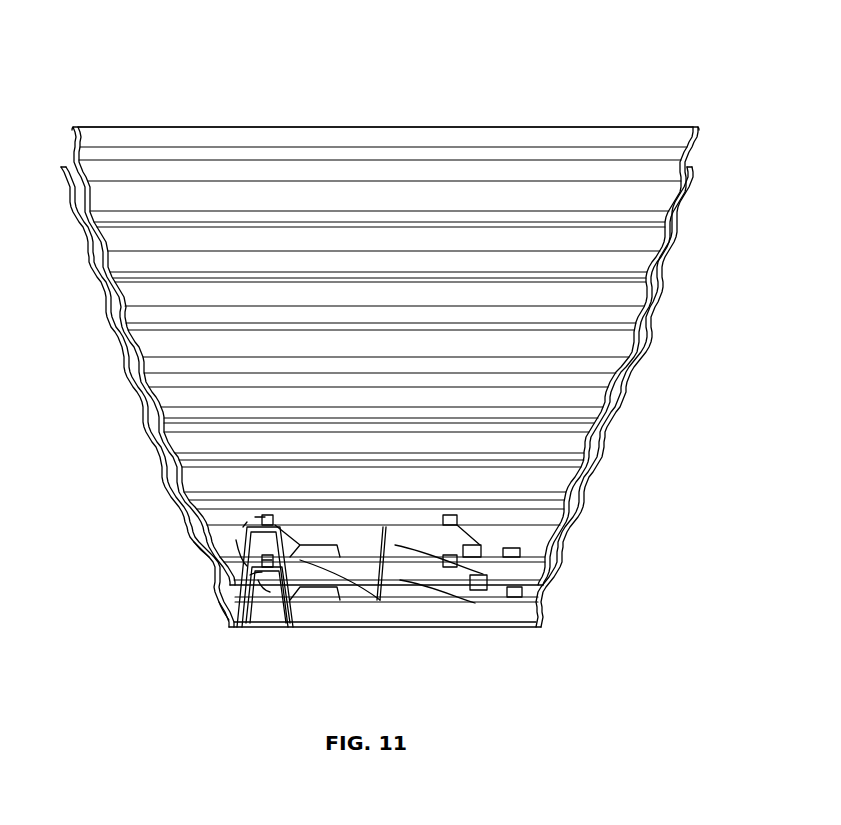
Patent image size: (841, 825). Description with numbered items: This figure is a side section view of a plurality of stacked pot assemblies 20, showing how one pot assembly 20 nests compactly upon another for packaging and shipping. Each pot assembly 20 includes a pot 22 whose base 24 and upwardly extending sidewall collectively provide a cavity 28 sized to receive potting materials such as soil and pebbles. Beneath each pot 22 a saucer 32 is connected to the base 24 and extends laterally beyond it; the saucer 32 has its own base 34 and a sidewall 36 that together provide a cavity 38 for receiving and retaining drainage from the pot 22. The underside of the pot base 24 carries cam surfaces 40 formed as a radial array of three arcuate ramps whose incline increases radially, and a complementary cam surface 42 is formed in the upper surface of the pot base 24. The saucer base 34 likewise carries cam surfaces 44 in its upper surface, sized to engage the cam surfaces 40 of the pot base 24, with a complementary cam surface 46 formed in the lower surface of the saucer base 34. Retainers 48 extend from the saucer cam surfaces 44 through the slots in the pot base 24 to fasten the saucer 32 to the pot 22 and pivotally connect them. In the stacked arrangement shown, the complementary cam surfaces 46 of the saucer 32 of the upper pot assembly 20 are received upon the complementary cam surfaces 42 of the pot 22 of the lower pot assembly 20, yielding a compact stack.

The pot assembly 20 is at (68, 118).
The pot 22 is at (693, 122).
The base 24 is at (437, 560).
The cavity 28 is at (80, 155).
The saucer 32 is at (216, 568).
The base 34 is at (520, 581).
The sidewall 36 is at (540, 564).
The cavity 38 is at (232, 565).
The cam surfaces 40 is at (250, 525).
The complementary cam surface 42 is at (405, 520).
The cam surfaces 44 is at (320, 590).
The complementary cam surface 46 is at (240, 540).
The retainers 48 is at (263, 517).